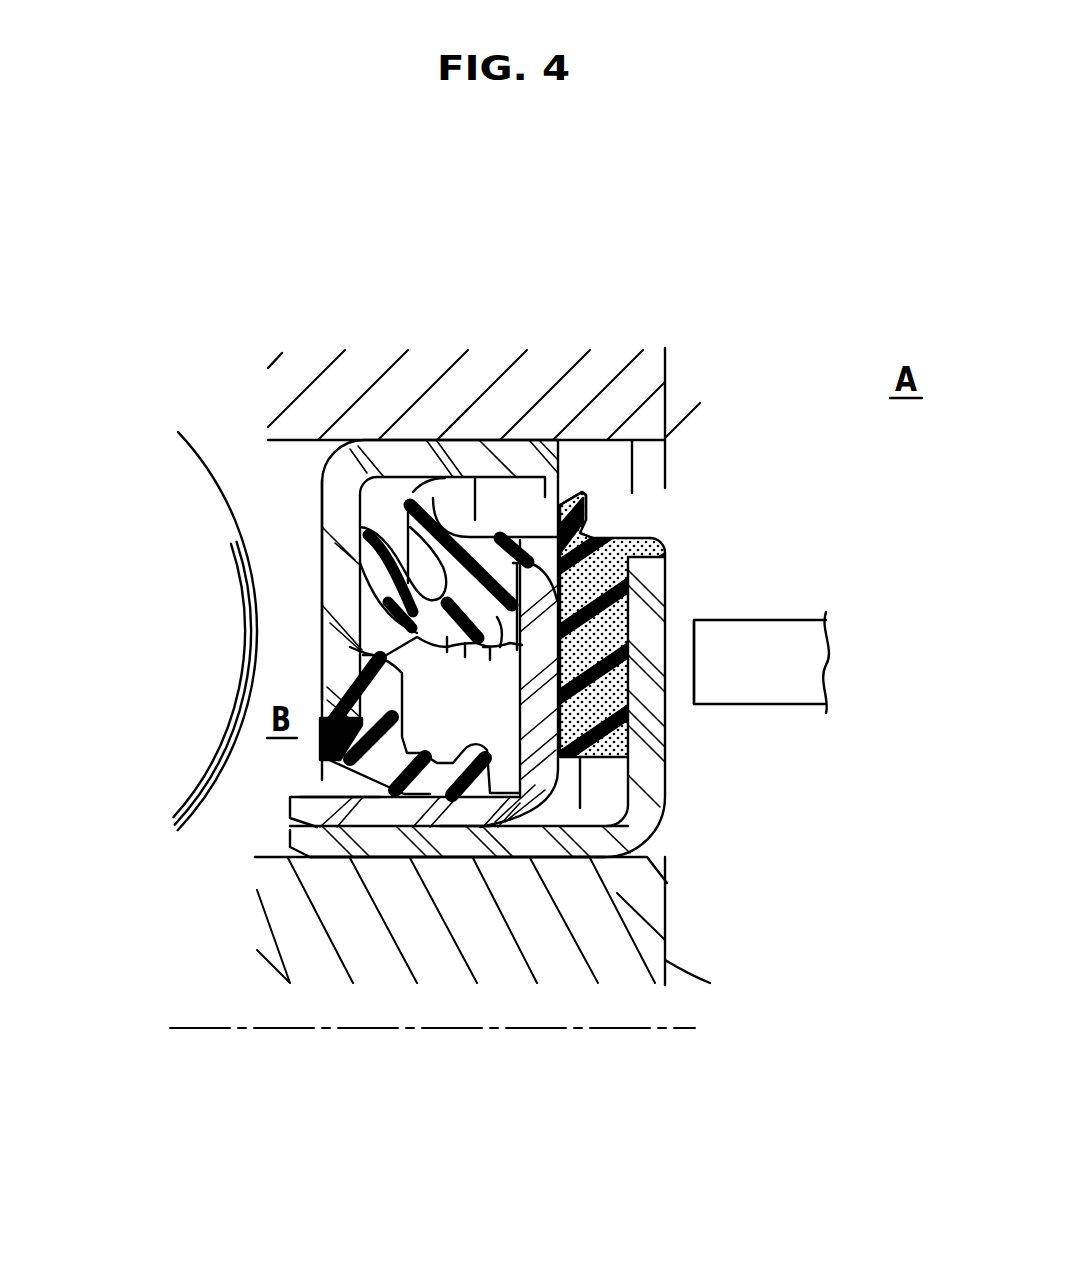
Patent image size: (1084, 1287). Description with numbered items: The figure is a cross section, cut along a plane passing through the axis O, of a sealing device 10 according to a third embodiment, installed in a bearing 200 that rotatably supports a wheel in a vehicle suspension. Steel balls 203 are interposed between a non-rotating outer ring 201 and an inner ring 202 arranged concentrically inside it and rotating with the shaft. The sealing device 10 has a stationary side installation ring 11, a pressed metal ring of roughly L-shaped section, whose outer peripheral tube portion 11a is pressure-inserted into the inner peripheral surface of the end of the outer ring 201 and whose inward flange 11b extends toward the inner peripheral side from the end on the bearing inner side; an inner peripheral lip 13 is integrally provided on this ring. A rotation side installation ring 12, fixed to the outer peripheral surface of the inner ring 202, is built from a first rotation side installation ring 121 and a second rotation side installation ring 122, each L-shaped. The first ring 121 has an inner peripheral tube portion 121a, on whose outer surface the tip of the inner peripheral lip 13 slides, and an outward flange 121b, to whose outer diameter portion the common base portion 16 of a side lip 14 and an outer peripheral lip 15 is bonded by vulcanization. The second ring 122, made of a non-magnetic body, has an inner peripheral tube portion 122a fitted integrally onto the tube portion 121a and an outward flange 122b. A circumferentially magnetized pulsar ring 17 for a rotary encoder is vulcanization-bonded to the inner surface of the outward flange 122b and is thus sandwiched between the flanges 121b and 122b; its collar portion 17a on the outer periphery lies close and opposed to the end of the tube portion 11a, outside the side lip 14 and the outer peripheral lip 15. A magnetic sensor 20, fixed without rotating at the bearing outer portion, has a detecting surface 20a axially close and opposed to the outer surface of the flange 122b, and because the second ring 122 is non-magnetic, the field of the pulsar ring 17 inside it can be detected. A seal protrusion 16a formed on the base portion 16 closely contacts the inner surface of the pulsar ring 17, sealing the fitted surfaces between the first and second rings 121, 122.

The sealing device 10 is at (298, 492).
The stationary side installation ring 11 is at (542, 436).
The outer peripheral tube portion 11a is at (508, 450).
The inward flange 11b is at (340, 596).
The rotation side installation ring 12 is at (528, 868).
The inner peripheral lip 13 is at (428, 783).
The side lip 14 is at (373, 556).
The outer peripheral lip 15 is at (410, 498).
The base portion 16 is at (486, 650).
The seal protrusion 16a is at (593, 537).
The pulsar ring 17 is at (603, 588).
The collar portion 17a is at (588, 500).
The magnetic sensor 20 is at (793, 657).
The detecting surface 20a is at (685, 645).
The first rotation side installation ring 121 is at (618, 860).
The inner peripheral tube portion 121a is at (467, 815).
The outward flange 121b is at (545, 735).
The second rotation side installation ring 122 is at (643, 823).
The inner peripheral tube portion 122a is at (373, 847).
The outward flange 122b is at (653, 705).
The bearing 200 is at (398, 330).
The outer ring 201 is at (463, 370).
The inner ring 202 is at (603, 960).
The steel balls 203 is at (185, 788).
The axis O is at (412, 1029).